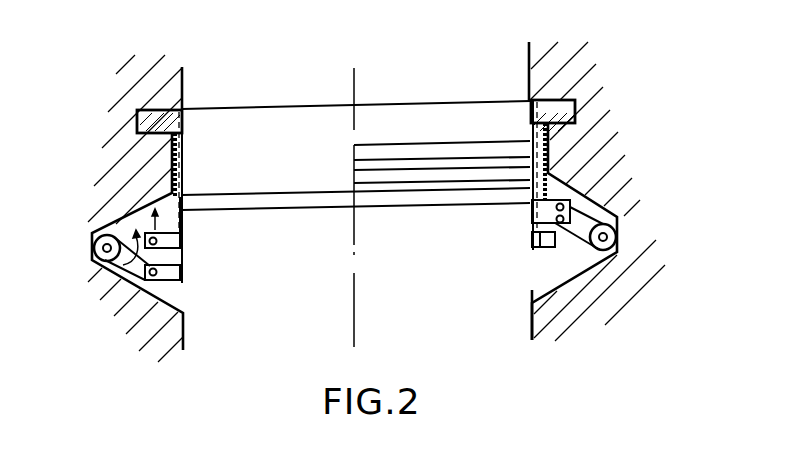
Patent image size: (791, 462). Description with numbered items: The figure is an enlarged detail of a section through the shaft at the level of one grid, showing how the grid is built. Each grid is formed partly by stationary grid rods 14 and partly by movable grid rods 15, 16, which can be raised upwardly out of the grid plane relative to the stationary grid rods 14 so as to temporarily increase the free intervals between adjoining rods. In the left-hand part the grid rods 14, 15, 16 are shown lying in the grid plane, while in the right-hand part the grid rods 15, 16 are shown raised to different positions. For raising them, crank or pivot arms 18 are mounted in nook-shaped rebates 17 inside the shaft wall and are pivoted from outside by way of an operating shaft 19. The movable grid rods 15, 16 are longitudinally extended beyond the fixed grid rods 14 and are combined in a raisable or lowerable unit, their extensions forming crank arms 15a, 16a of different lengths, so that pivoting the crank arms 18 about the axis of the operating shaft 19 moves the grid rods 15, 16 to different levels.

The stationary grid rods 14 is at (466, 200).
The movable grid rod 15 is at (413, 178).
The movable grid rod 16 is at (382, 155).
The crank arm 15a is at (168, 240).
The crank arm 16a is at (170, 273).
The nook-shaped rebate 17 is at (533, 283).
The crank or pivot arm 18 is at (619, 212).
The operating shaft 19 is at (617, 250).